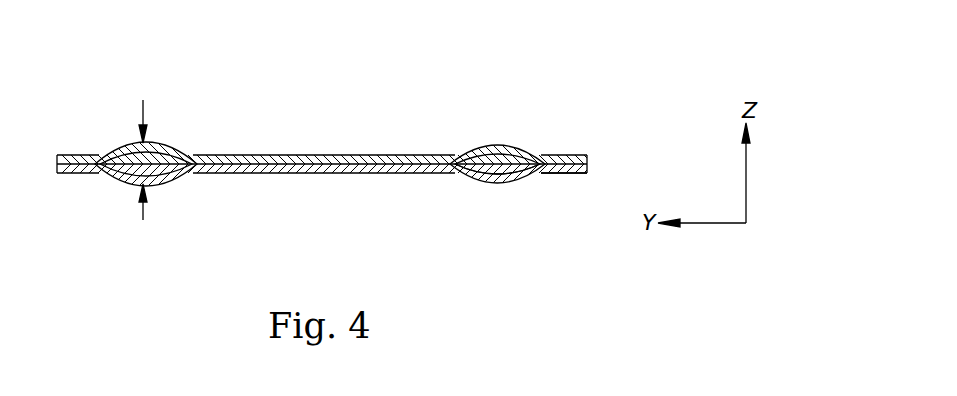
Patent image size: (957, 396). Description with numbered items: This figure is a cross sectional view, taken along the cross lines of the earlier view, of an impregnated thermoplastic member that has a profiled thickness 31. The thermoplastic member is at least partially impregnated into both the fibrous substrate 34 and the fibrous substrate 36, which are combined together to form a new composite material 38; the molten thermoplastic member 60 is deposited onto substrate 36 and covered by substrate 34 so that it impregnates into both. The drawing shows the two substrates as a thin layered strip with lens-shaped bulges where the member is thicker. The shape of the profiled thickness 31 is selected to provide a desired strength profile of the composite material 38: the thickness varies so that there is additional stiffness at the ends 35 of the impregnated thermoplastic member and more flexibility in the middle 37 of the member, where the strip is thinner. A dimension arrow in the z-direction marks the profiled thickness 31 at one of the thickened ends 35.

The profiled thickness 31 is at (148, 147).
The substrate 34 is at (335, 163).
The ends 35 is at (98, 163).
The substrate 36 is at (581, 175).
The middle 37 is at (320, 173).
The composite material 38 is at (228, 155).
The molten thermoplastic member 60 is at (457, 168).